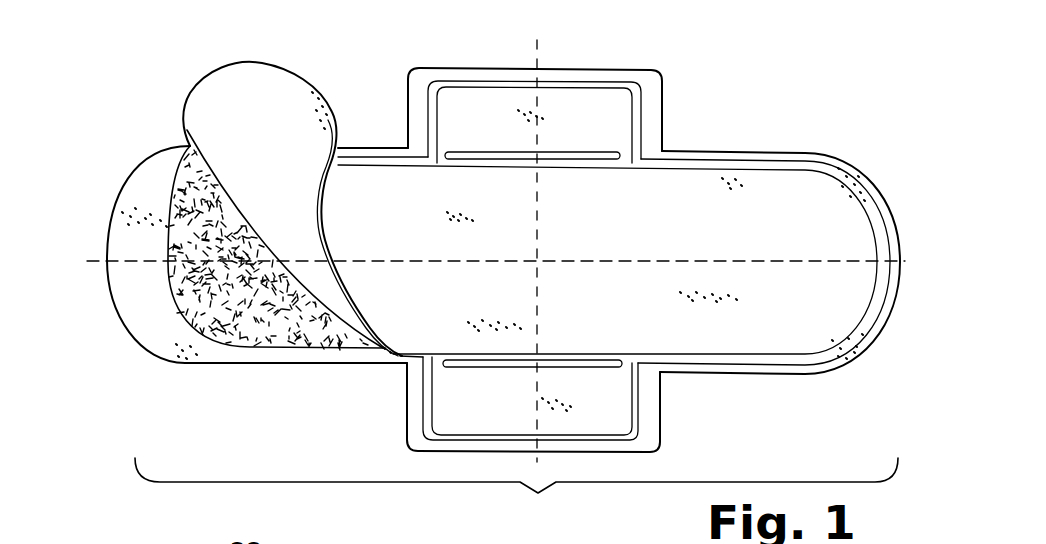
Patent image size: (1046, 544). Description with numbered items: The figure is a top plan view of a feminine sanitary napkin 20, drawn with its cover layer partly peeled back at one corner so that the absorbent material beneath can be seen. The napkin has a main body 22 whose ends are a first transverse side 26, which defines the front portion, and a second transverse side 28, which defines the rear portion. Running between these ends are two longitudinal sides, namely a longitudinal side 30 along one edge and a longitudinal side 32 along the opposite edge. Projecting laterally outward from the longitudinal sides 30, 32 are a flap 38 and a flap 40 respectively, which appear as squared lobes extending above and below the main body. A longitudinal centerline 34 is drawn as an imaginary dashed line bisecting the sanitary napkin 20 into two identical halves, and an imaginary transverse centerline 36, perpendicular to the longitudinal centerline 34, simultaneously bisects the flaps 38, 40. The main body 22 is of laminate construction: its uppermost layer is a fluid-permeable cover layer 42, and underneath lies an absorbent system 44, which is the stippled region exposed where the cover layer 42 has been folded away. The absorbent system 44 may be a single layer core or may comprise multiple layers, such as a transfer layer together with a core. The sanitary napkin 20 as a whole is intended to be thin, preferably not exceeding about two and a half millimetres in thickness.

The sanitary napkin 20 is at (203, 64).
The main body 22 is at (516, 497).
The first transverse side 26 is at (887, 198).
The second transverse side 28 is at (118, 196).
The longitudinal side 30 is at (752, 152).
The longitudinal side 32 is at (797, 376).
The longitudinal centerline 34 is at (500, 261).
The transverse centerline 36 is at (537, 234).
The flap 38 is at (664, 70).
The flap 40 is at (666, 428).
The fluid-permeable cover layer 42 is at (800, 326).
The absorbent system 44 is at (252, 348).